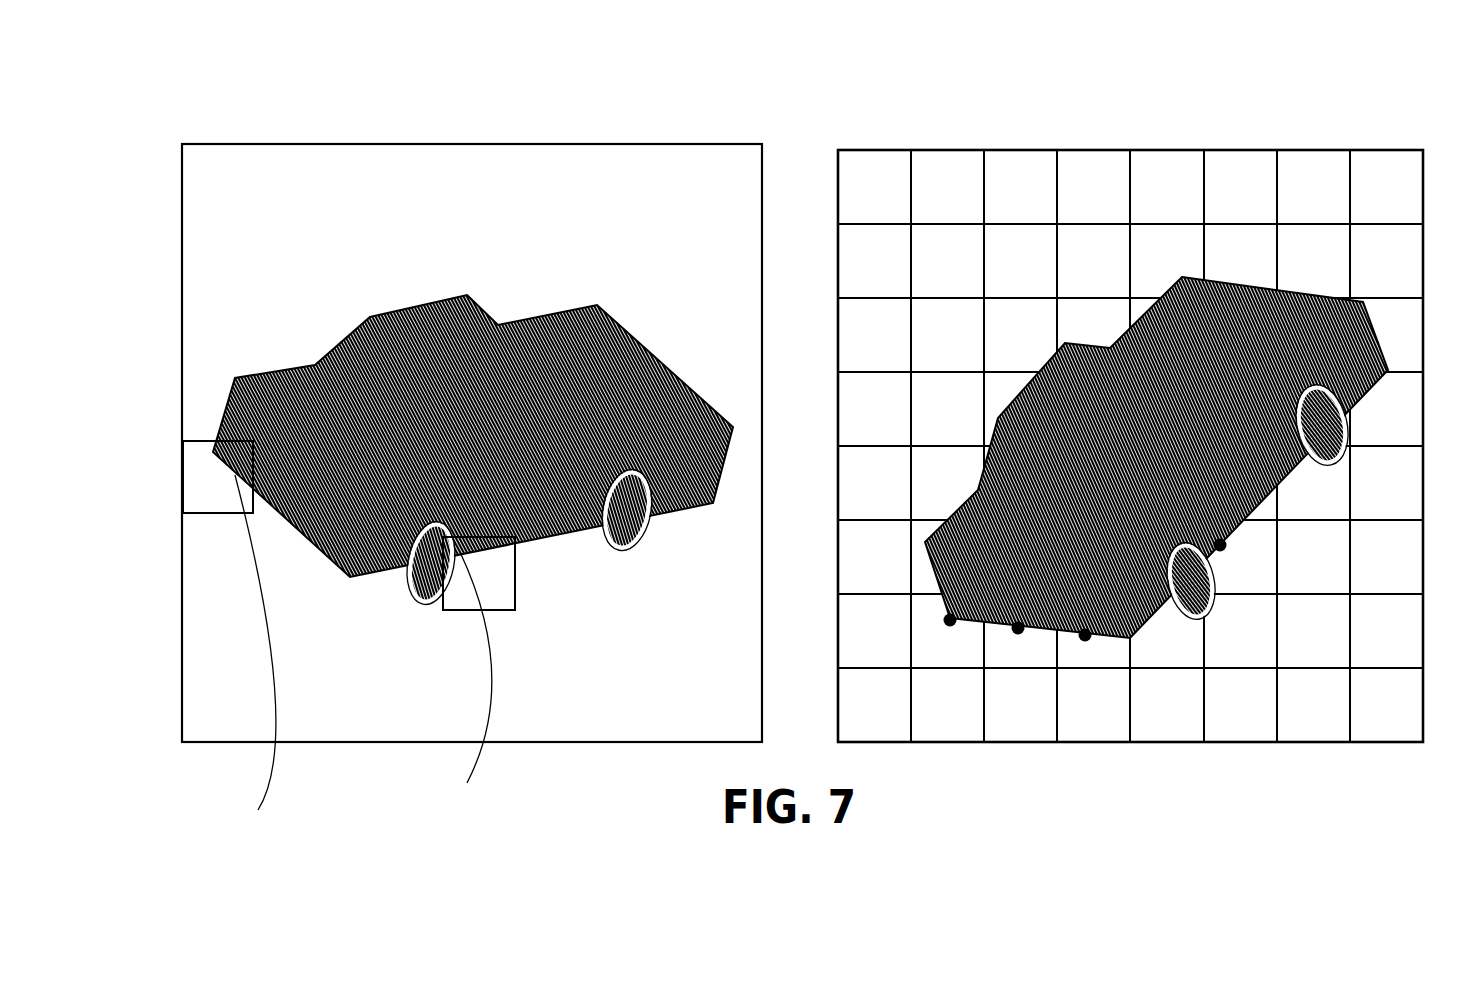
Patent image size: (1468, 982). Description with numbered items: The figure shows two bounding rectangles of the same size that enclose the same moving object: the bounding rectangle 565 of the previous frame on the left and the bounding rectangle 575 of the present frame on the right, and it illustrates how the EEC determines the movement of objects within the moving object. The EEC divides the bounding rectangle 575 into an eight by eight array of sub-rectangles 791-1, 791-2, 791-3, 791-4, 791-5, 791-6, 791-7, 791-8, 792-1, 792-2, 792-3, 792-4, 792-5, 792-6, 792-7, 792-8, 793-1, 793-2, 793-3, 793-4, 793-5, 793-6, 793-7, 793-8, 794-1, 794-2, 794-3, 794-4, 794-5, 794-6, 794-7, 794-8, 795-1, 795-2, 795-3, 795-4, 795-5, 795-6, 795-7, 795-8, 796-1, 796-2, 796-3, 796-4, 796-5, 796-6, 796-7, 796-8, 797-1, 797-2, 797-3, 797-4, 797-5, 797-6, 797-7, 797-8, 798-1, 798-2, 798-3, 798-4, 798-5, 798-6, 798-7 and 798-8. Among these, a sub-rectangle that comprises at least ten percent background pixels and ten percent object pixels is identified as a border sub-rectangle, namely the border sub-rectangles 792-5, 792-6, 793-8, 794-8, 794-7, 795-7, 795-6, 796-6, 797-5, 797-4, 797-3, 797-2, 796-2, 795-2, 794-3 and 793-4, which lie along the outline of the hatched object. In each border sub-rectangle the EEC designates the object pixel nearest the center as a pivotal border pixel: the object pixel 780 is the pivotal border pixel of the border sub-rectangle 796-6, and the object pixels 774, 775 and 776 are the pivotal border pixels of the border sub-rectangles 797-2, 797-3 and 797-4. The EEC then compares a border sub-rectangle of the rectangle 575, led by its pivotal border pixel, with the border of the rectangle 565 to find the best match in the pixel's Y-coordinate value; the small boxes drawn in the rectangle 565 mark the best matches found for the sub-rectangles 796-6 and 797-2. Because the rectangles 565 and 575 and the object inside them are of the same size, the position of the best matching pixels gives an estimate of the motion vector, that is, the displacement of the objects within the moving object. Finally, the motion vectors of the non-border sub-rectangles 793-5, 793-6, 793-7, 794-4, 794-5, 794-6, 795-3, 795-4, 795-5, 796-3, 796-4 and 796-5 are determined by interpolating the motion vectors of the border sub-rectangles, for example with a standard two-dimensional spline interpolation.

The bounding rectangle of the previous frame 565 is at (400, 97).
The bounding rectangle of the present frame 575 is at (1089, 97).
The object pixel 774 is at (950, 620).
The object pixel 775 is at (1018, 628).
The object pixel 776 is at (1085, 635).
The object pixel 780 is at (1220, 545).
The sub-rectangle 791-1 is at (874, 187).
The sub-rectangle 791-2 is at (947, 187).
The sub-rectangle 791-3 is at (1020, 187).
The sub-rectangle 791-4 is at (1093, 187).
The sub-rectangle 791-5 is at (1167, 187).
The sub-rectangle 791-6 is at (1240, 187).
The sub-rectangle 791-7 is at (1313, 187).
The sub-rectangle 791-8 is at (1386, 187).
The sub-rectangle 792-1 is at (874, 261).
The sub-rectangle 792-2 is at (947, 261).
The sub-rectangle 792-3 is at (1020, 261).
The sub-rectangle 792-4 is at (1093, 261).
The border sub-rectangle 792-5 is at (1167, 261).
The border sub-rectangle 792-6 is at (1240, 261).
The sub-rectangle 792-7 is at (1313, 261).
The sub-rectangle 792-8 is at (1386, 261).
The sub-rectangle 793-1 is at (874, 335).
The sub-rectangle 793-2 is at (947, 335).
The sub-rectangle 793-3 is at (1020, 335).
The border sub-rectangle 793-4 is at (1093, 335).
The non-border sub-rectangle 793-5 is at (1167, 335).
The non-border sub-rectangle 793-6 is at (1240, 335).
The non-border sub-rectangle 793-7 is at (1313, 335).
The border sub-rectangle 793-8 is at (1386, 335).
The sub-rectangle 794-1 is at (874, 409).
The sub-rectangle 794-2 is at (947, 409).
The border sub-rectangle 794-3 is at (1020, 409).
The non-border sub-rectangle 794-4 is at (1093, 409).
The non-border sub-rectangle 794-5 is at (1167, 409).
The non-border sub-rectangle 794-6 is at (1240, 409).
The border sub-rectangle 794-7 is at (1313, 409).
The border sub-rectangle 794-8 is at (1386, 409).
The sub-rectangle 795-1 is at (874, 483).
The border sub-rectangle 795-2 is at (947, 483).
The non-border sub-rectangle 795-3 is at (1020, 483).
The non-border sub-rectangle 795-4 is at (1093, 483).
The non-border sub-rectangle 795-5 is at (1167, 483).
The border sub-rectangle 795-6 is at (1240, 483).
The border sub-rectangle 795-7 is at (1313, 483).
The sub-rectangle 795-8 is at (1386, 483).
The sub-rectangle 796-1 is at (874, 557).
The border sub-rectangle 796-2 is at (947, 557).
The non-border sub-rectangle 796-3 is at (1020, 557).
The non-border sub-rectangle 796-4 is at (1093, 557).
The non-border sub-rectangle 796-5 is at (1167, 557).
The border sub-rectangle 796-6 is at (1240, 557).
The sub-rectangle 796-7 is at (1313, 557).
The sub-rectangle 796-8 is at (1386, 557).
The sub-rectangle 797-1 is at (874, 631).
The border sub-rectangle 797-2 is at (947, 631).
The border sub-rectangle 797-3 is at (1020, 631).
The border sub-rectangle 797-4 is at (1093, 631).
The border sub-rectangle 797-5 is at (1167, 631).
The sub-rectangle 797-6 is at (1240, 631).
The sub-rectangle 797-7 is at (1313, 631).
The sub-rectangle 797-8 is at (1386, 631).
The sub-rectangle 798-1 is at (874, 705).
The sub-rectangle 798-2 is at (947, 705).
The sub-rectangle 798-3 is at (1020, 705).
The sub-rectangle 798-4 is at (1093, 705).
The sub-rectangle 798-5 is at (1167, 705).
The sub-rectangle 798-6 is at (1240, 705).
The sub-rectangle 798-7 is at (1313, 705).
The sub-rectangle 798-8 is at (1386, 705).